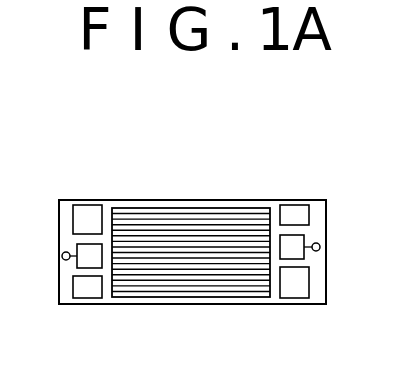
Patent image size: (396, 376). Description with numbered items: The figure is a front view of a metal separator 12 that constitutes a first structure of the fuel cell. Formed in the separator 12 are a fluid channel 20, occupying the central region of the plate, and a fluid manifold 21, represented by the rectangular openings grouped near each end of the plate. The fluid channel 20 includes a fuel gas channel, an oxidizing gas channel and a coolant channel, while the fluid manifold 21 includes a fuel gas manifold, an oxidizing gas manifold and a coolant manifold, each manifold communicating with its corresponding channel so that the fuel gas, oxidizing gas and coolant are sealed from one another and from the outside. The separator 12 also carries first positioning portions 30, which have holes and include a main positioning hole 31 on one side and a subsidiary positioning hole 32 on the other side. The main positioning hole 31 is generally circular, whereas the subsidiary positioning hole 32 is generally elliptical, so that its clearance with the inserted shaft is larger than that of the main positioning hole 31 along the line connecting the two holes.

The separator 12 is at (226, 303).
The fluid channel 20 is at (163, 286).
The fluid manifold 21 is at (86, 213).
The first positioning portions 30 is at (122, 137).
The main positioning hole 31 is at (78, 256).
The subsidiary positioning hole 32 is at (303, 247).